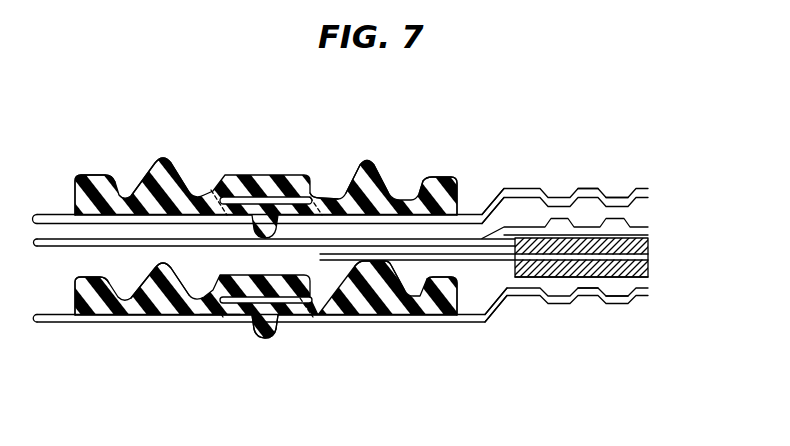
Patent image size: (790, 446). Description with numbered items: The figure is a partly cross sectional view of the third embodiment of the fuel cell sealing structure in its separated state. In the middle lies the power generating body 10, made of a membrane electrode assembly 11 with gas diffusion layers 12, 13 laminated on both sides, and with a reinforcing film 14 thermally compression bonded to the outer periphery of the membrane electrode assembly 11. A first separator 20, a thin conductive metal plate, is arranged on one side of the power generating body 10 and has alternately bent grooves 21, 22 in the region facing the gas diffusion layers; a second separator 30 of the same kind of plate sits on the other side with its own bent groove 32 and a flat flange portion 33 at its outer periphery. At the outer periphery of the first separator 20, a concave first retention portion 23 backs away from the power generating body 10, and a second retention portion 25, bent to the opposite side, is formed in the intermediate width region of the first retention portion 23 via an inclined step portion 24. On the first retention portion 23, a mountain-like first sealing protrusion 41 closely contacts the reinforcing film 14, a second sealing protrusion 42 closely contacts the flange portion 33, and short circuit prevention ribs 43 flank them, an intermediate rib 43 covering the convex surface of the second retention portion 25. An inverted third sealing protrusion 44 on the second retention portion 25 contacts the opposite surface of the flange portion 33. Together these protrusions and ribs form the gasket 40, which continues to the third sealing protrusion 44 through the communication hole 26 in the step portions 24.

The power generating body 10 is at (607, 246).
The membrane electrode assembly 11 is at (620, 264).
The gas diffusion layer 12 is at (540, 278).
The gas diffusion layer 13 is at (621, 237).
The reinforcing film 14 is at (353, 261).
The first separator 20 is at (550, 249).
The groove 21 is at (560, 188).
The groove 22 is at (591, 198).
The first retention portion 23 is at (143, 229).
The step portion 24 is at (217, 318).
The second retention portion 25 is at (252, 201).
The communication hole 26 is at (218, 203).
The second separator 30 is at (341, 199).
The groove 32 is at (590, 228).
The flange portion 33 is at (212, 246).
The gasket 40 is at (266, 241).
The first sealing protrusion 41 is at (367, 158).
The second sealing protrusion 42 is at (163, 156).
The short circuit prevention rib 43 is at (100, 176).
The third sealing protrusion 44 is at (316, 199).